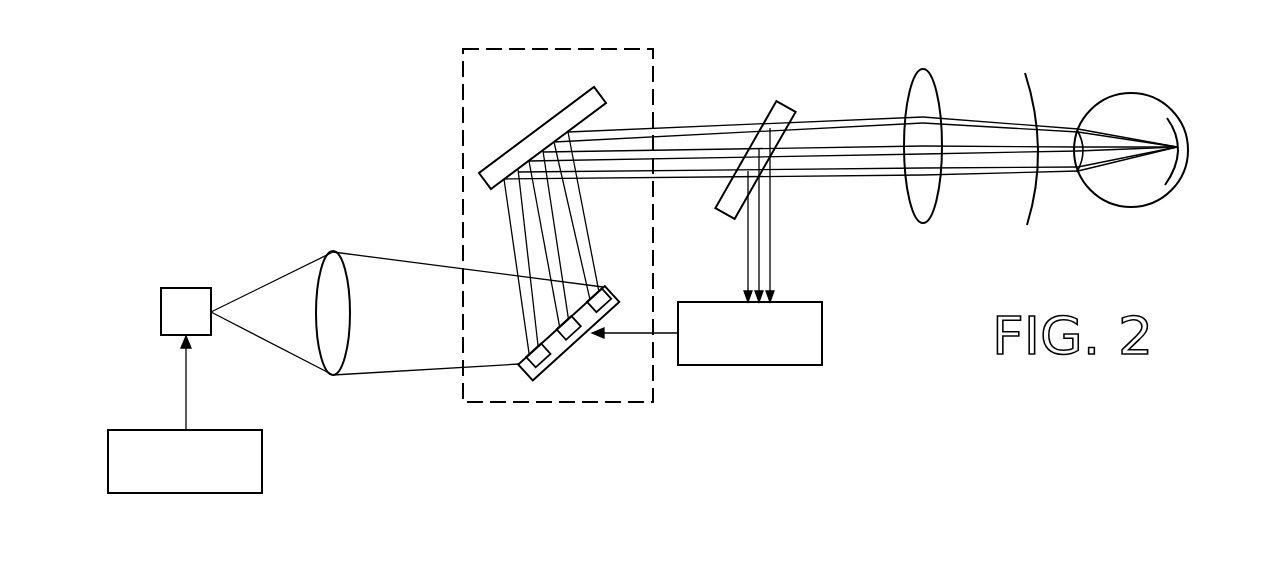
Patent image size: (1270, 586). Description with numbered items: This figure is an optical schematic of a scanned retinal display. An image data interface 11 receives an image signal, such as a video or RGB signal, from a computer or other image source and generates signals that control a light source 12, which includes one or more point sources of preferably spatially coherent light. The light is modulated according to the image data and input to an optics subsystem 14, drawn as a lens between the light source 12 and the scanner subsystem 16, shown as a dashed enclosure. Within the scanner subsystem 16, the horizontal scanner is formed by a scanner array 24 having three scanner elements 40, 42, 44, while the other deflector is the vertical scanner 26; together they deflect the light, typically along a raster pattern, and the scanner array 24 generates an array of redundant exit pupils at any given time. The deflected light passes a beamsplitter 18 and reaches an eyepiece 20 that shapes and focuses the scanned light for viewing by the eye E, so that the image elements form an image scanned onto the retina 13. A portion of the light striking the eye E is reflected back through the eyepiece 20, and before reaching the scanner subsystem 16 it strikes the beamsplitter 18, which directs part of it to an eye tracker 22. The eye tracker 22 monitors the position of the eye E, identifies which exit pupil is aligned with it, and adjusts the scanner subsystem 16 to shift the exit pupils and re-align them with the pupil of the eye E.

The image data interface 11 is at (225, 430).
The light source 12 is at (185, 287).
The retina 13 is at (1173, 122).
The optics subsystem 14 is at (333, 252).
The scanner subsystem 16 is at (600, 49).
The beamsplitter 18 is at (783, 105).
The eyepiece 20 is at (937, 83).
The eye tracker 22 is at (805, 302).
The scanner array 24 is at (557, 367).
The vertical scanner 26 is at (553, 112).
The scanner element 40 is at (528, 373).
The scanner element 42 is at (580, 337).
The scanner element 44 is at (613, 283).
The eye E is at (1133, 93).